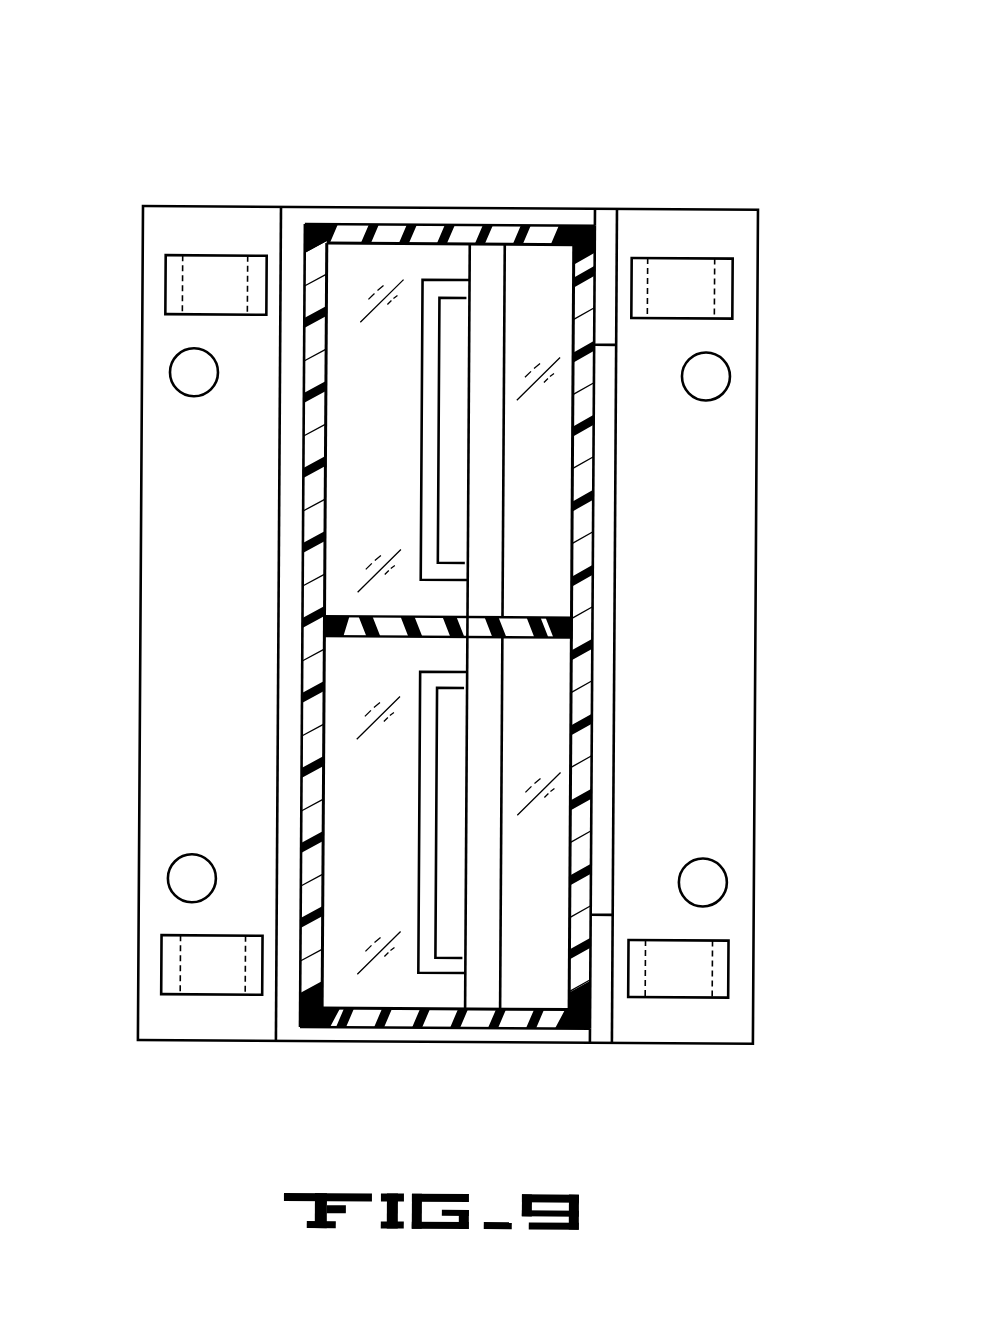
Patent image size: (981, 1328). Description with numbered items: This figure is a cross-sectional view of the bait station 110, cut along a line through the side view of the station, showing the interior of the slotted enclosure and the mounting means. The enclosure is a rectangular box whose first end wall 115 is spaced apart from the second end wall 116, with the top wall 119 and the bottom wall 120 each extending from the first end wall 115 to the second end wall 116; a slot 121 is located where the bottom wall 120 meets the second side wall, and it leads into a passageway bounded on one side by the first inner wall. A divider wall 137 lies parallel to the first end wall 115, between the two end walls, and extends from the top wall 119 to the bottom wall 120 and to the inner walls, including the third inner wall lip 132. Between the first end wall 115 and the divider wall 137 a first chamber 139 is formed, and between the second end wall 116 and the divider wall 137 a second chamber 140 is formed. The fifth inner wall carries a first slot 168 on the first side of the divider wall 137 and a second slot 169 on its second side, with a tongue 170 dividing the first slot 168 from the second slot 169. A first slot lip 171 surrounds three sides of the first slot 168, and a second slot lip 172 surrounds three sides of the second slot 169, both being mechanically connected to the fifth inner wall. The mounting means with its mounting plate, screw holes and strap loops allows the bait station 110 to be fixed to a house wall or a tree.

The bait station 110 is at (168, 100).
The first end wall 115 is at (538, 1020).
The second end wall 116 is at (321, 223).
The top wall 119 is at (305, 394).
The bottom wall 120 is at (595, 231).
The slot 121 is at (600, 500).
The third inner wall lip 132 is at (487, 248).
The divider wall 137 is at (533, 630).
The first chamber 139 is at (357, 767).
The second chamber 140 is at (357, 454).
The first slot 168 is at (454, 937).
The second slot 169 is at (457, 322).
The tongue 170 is at (450, 651).
The first slot lip 171 is at (431, 954).
The second slot lip 172 is at (433, 571).